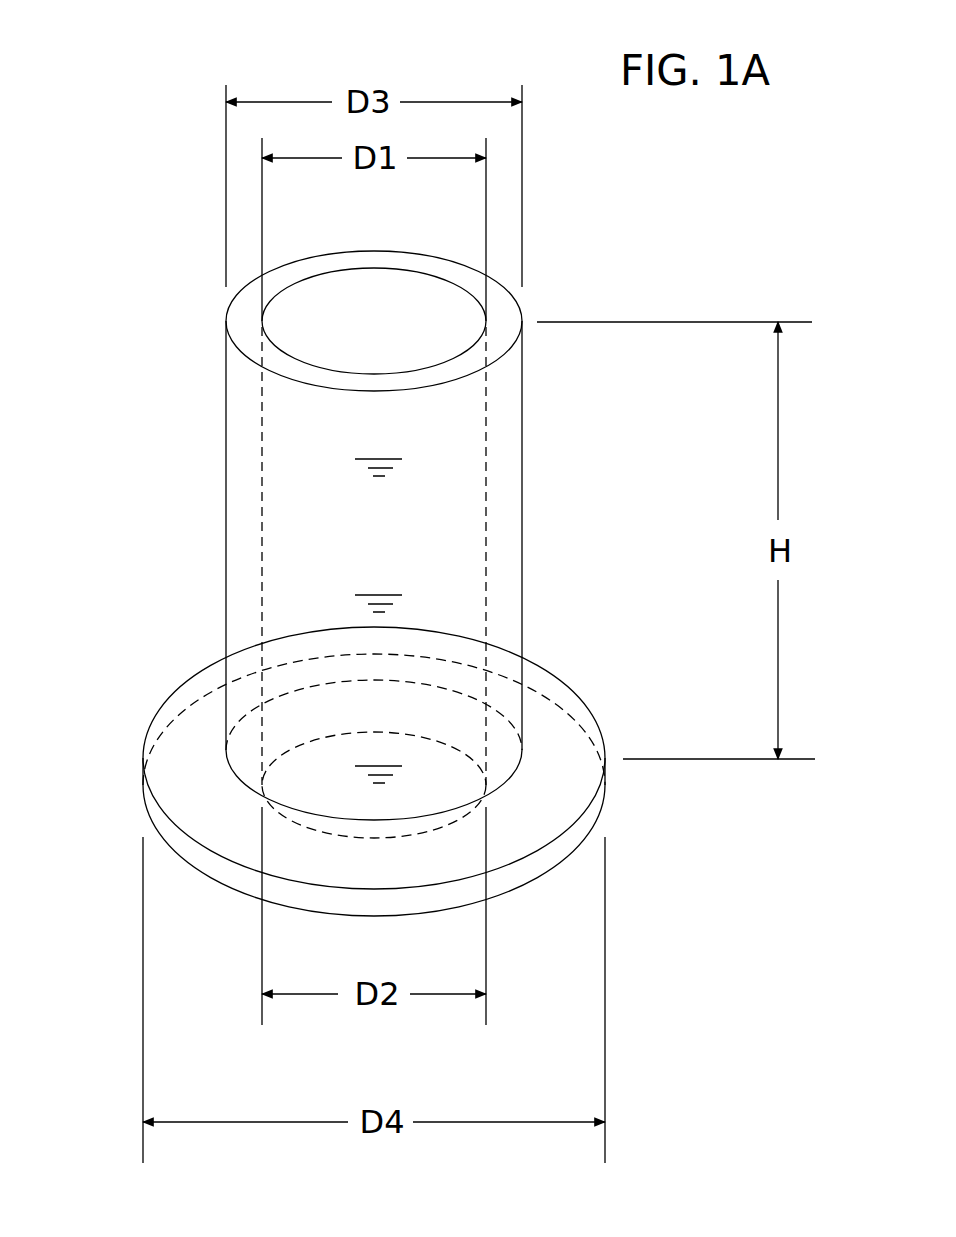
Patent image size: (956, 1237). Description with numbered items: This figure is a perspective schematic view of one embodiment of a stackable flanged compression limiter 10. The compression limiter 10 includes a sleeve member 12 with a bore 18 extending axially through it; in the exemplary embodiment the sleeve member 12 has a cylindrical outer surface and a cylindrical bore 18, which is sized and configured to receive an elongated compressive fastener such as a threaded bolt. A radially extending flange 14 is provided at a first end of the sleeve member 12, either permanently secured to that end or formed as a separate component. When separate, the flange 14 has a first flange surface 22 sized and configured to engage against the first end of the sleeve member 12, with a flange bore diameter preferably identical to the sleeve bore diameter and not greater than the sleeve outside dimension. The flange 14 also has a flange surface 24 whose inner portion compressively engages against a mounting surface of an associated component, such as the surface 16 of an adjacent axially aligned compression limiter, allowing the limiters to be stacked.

The stackable flanged compression limiter 10 is at (180, 491).
The sleeve member 12 is at (523, 507).
The flange 14 is at (604, 803).
The surface 16 is at (489, 278).
The bore 18 is at (373, 318).
The first flange surface 22 is at (567, 760).
The flange surface 24 is at (545, 873).